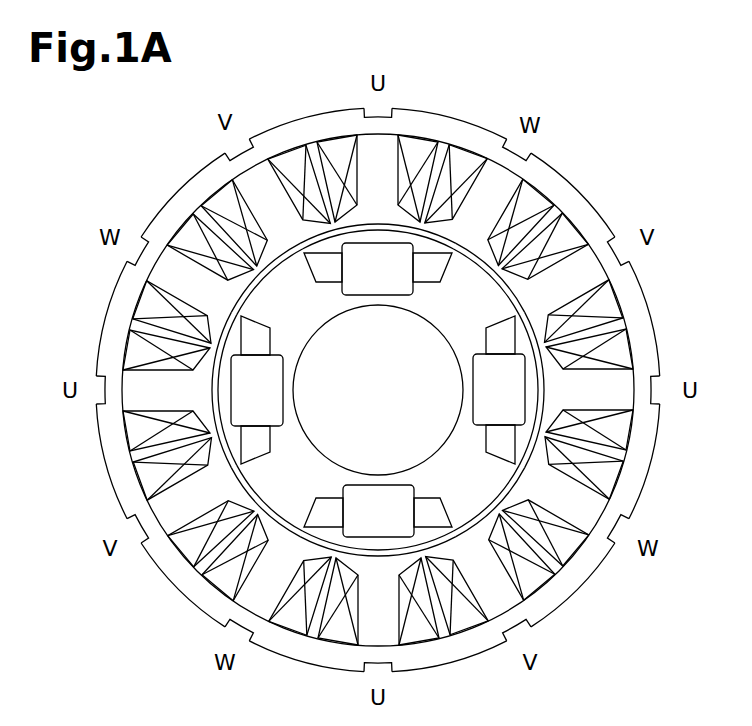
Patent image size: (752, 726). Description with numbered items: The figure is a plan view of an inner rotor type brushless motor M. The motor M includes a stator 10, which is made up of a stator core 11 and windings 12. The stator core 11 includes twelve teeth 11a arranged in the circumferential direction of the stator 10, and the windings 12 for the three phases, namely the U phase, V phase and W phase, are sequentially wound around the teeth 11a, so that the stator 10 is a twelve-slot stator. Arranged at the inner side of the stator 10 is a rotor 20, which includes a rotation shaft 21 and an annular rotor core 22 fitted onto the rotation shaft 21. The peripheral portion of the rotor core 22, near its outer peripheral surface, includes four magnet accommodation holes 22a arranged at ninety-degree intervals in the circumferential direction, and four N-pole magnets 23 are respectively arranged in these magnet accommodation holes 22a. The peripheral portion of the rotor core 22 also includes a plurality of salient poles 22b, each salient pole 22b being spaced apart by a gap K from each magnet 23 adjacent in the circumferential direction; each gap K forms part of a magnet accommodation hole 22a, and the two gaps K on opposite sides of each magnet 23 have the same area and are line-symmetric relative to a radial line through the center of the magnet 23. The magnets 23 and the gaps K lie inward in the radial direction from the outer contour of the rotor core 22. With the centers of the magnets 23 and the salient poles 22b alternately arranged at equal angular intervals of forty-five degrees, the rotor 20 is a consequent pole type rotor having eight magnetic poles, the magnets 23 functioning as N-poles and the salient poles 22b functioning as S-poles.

The brushless motor M is at (622, 151).
The stator 10 is at (606, 216).
The stator core 11 is at (118, 292).
The teeth 11a is at (390, 152).
The windings 12 is at (340, 147).
The rotor 20 is at (292, 242).
The rotation shaft 21 is at (334, 450).
The rotor core 22 is at (256, 296).
The magnet accommodation holes 22a is at (380, 253).
The salient poles 22b is at (512, 286).
The magnets 23 is at (378, 296).
The gap K is at (327, 270).